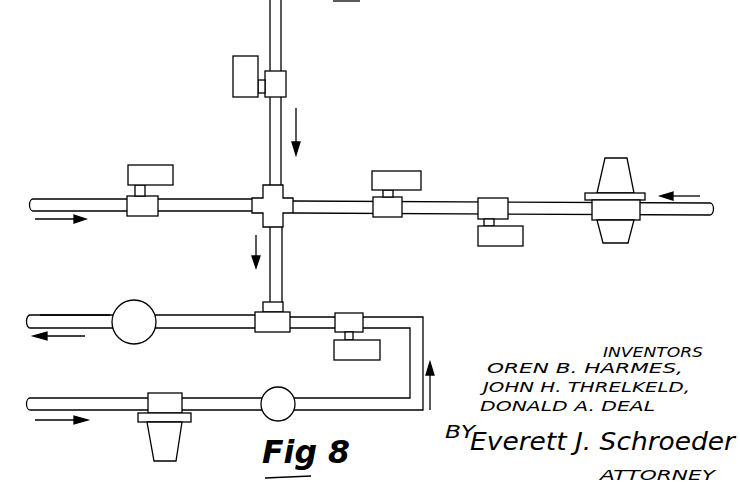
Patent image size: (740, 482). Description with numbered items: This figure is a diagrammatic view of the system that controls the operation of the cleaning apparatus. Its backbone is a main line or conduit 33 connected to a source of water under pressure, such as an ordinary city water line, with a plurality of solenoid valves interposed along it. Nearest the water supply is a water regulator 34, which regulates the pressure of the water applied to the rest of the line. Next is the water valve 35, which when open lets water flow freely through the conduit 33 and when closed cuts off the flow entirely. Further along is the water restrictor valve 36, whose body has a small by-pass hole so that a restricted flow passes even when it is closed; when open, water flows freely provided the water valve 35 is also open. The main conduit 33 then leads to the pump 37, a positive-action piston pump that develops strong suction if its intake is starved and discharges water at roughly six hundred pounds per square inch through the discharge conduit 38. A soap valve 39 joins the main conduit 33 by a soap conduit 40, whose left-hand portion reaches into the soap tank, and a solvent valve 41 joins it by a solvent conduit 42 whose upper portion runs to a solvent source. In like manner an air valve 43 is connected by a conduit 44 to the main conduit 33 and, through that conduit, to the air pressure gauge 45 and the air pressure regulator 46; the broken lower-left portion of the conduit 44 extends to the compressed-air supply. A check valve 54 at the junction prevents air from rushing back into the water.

The main line or conduit 33 is at (340, 178).
The water regulator 34 is at (606, 172).
The water valve 35 is at (482, 235).
The water restrictor valve 36 is at (395, 179).
The pump 37 is at (145, 308).
The discharge conduit 38 is at (78, 294).
The soap valve 39 is at (162, 150).
The soap conduit 40 is at (78, 184).
The solvent valve 41 is at (237, 72).
The solvent conduit 42 is at (277, 57).
The air valve 43 is at (359, 352).
The conduit 44 is at (300, 320).
The air pressure gauge 45 is at (299, 370).
The air pressure regulator 46 is at (156, 444).
The check valve 54 is at (271, 213).